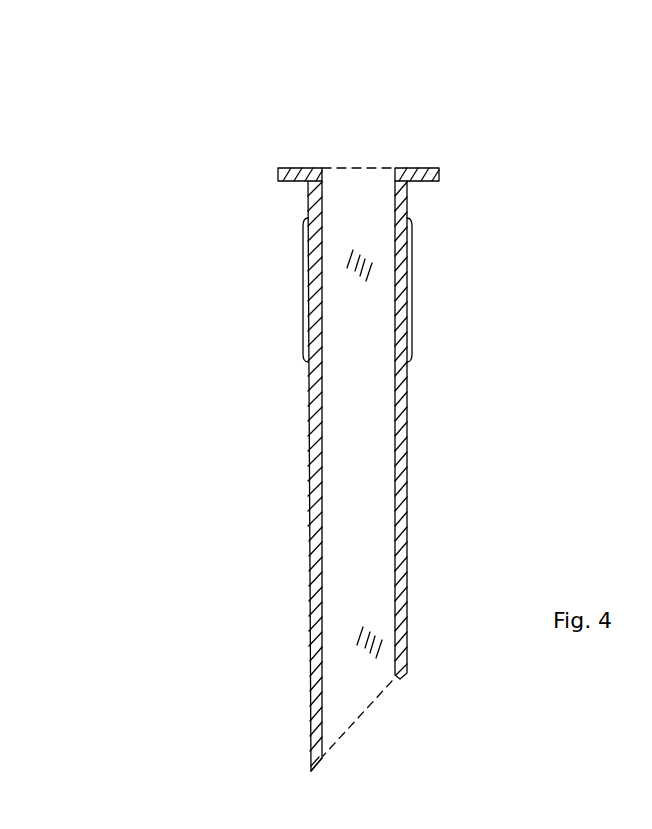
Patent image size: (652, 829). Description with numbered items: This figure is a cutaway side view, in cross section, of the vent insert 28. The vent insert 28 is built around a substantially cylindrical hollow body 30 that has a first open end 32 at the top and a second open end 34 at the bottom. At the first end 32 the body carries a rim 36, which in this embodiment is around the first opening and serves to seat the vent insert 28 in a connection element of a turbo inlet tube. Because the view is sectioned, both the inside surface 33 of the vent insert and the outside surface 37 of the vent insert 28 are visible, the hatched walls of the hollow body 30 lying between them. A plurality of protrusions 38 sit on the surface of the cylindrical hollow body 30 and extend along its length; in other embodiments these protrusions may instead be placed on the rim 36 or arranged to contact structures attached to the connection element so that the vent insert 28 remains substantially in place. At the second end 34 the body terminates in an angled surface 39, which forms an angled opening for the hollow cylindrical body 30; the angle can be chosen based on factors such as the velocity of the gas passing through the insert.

The vent insert 28 is at (116, 185).
The hollow body 30 is at (289, 513).
The first open end 32 is at (230, 145).
The inside surface 33 is at (378, 228).
The second open end 34 is at (259, 742).
The rim 36 is at (457, 158).
The outside surface 37 is at (418, 432).
The protrusions 38 is at (430, 303).
The angled surface 39 is at (383, 714).